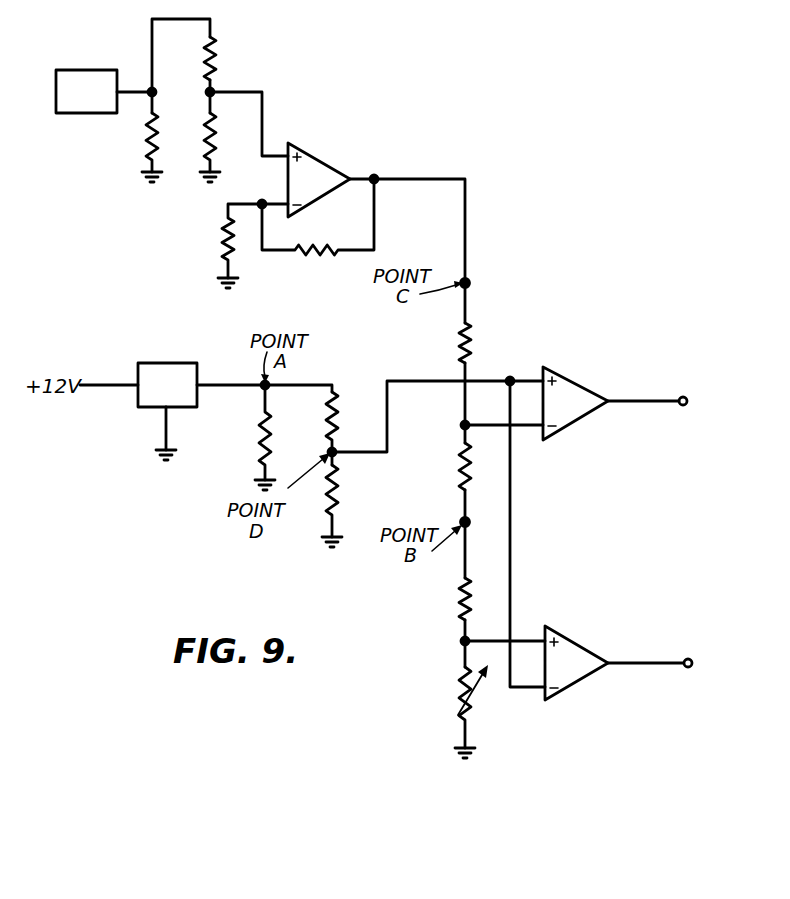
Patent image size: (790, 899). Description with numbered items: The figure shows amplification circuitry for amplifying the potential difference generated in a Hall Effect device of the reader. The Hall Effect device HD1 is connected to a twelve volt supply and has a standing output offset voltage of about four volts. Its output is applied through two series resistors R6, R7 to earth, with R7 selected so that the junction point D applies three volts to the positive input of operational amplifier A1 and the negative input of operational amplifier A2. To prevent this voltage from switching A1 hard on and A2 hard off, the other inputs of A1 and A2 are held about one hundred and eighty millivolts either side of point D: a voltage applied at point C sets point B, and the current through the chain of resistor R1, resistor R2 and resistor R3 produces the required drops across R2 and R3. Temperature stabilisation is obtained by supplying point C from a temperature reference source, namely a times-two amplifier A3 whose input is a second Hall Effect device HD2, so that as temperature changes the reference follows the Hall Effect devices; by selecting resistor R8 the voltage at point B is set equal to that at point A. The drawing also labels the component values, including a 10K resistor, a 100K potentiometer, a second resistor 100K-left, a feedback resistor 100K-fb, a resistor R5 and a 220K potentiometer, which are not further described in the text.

The Hall Effect device HD2 is at (86, 91).
The Hall Effect device HD1 is at (167, 411).
The resistor R8 is at (213, 52).
The 10K resistor 10K is at (149, 153).
The 100K potentiometer 100K is at (213, 135).
The 100K resistor 100K-left is at (226, 249).
The 100K feedback resistor 100K-fb is at (300, 253).
The operational amplifier A3 is at (319, 180).
The resistor R1 is at (468, 327).
The resistor R5 10K R5 is at (263, 417).
The series resistor R7 is at (336, 423).
The series resistor R6 is at (342, 514).
The resistor R2 is at (443, 464).
The resistor R3 is at (466, 586).
The 220K potentiometer 220K is at (461, 712).
The operational amplifier A1 is at (615, 403).
The operational amplifier A2 is at (618, 663).